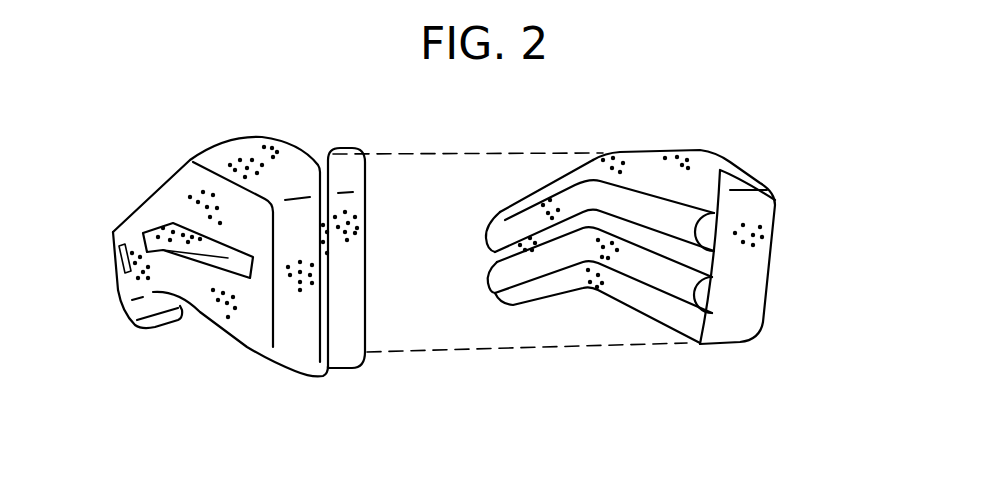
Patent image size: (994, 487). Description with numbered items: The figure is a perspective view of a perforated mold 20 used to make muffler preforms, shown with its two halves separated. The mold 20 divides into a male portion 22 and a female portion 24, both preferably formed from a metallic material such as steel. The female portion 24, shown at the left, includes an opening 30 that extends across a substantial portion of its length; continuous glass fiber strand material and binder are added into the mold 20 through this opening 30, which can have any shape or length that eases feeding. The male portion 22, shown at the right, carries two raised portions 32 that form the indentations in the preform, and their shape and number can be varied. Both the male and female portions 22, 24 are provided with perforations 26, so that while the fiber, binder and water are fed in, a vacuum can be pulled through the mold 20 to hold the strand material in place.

The perforated mold 20 is at (119, 182).
The male portion 22 is at (722, 172).
The female portion 24 is at (323, 160).
The perforations 26 is at (266, 152).
The opening 30 is at (228, 256).
The raised portions 32 is at (713, 235).